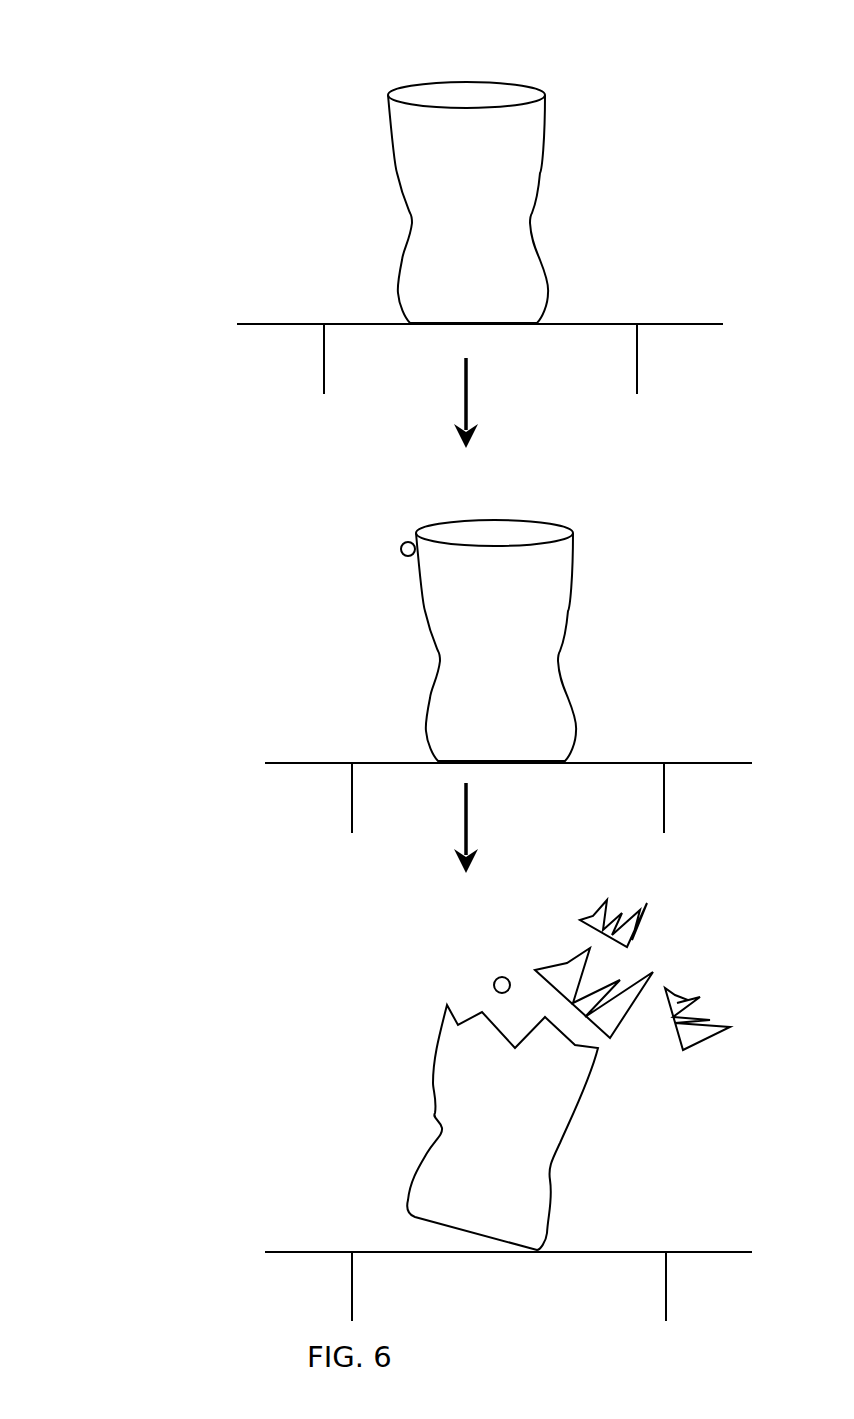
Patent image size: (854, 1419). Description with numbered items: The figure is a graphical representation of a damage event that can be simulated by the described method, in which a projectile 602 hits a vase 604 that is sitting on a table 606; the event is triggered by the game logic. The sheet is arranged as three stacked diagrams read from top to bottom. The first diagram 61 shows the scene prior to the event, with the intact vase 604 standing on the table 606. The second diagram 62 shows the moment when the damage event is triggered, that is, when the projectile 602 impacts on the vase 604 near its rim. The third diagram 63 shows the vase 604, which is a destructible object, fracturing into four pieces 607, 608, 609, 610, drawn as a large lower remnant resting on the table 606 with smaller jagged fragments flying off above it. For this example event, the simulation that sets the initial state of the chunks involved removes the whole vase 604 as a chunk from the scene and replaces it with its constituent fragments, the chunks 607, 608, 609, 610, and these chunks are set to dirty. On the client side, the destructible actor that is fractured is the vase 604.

The first diagram 61 is at (402, 205).
The second diagram 62 is at (398, 673).
The third diagram 63 is at (426, 1096).
The projectile 602 is at (401, 553).
The vase 604 is at (538, 138).
The table 606 is at (683, 323).
The piece 607 is at (647, 907).
The piece 608 is at (700, 997).
The piece 609 is at (653, 972).
The piece 610 is at (548, 1223).